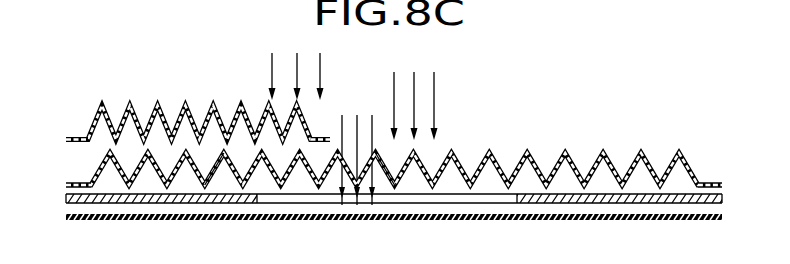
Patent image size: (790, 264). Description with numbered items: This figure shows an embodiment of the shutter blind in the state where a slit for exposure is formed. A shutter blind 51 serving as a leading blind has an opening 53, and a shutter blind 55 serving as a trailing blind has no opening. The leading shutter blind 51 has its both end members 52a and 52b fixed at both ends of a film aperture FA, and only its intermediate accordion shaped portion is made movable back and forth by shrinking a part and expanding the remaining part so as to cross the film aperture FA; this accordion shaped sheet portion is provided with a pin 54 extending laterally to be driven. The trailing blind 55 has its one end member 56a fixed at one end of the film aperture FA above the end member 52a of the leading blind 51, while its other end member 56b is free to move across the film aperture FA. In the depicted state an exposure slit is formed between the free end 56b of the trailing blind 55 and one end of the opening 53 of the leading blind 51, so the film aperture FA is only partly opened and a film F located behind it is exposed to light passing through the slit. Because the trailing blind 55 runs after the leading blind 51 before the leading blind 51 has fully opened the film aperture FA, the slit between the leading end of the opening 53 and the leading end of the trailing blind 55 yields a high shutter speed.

The shutter blind 51 is at (531, 141).
The end member 52a is at (82, 182).
The end member 52b is at (711, 182).
The opening 53 is at (213, 170).
The pin 54 is at (388, 185).
The shutter blind 55 is at (188, 97).
The end member 56a is at (82, 137).
The end member 56b is at (322, 137).
The film aperture FA is at (518, 200).
The film F is at (605, 222).